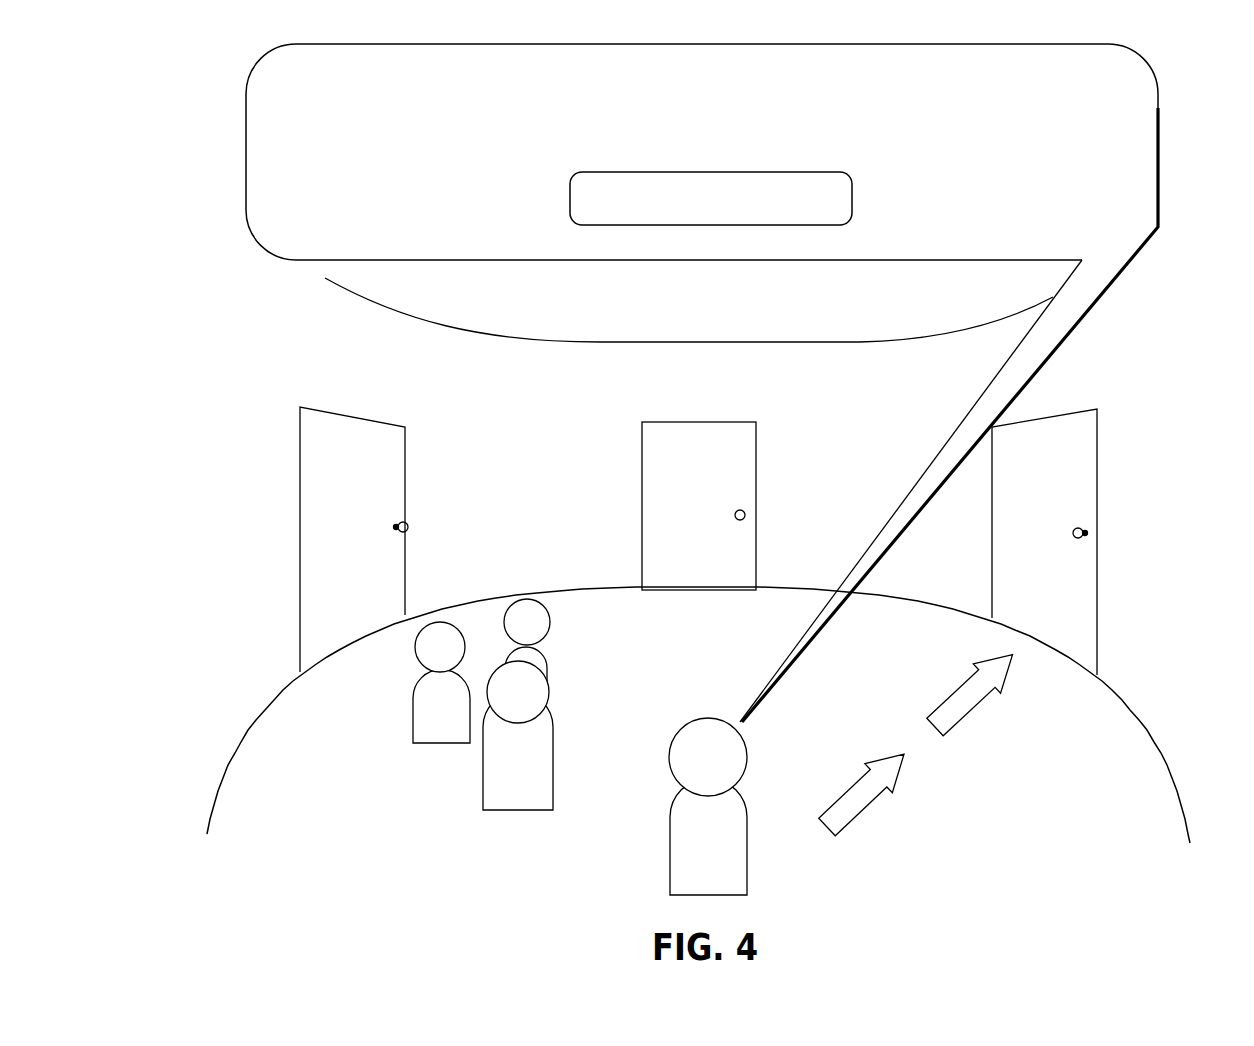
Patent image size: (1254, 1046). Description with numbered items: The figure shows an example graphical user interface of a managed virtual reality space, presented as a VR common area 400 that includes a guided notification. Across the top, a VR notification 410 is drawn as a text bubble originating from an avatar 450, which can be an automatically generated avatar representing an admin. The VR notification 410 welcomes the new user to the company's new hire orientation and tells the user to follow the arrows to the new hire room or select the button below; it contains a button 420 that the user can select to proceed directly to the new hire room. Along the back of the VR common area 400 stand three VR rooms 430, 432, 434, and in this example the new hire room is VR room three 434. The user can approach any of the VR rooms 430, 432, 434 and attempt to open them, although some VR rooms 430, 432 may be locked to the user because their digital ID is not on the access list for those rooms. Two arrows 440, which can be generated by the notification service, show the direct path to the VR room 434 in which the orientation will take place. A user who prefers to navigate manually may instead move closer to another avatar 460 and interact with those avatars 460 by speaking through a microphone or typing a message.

The VR common area 400 is at (297, 797).
The VR notification 410 is at (1158, 128).
The button 420 is at (852, 195).
The VR room 430 is at (405, 427).
The VR room 432 is at (756, 422).
The VR room 434 is at (1097, 409).
The arrows 440 is at (973, 712).
The avatar 450 is at (737, 802).
The avatar 460 is at (443, 633).